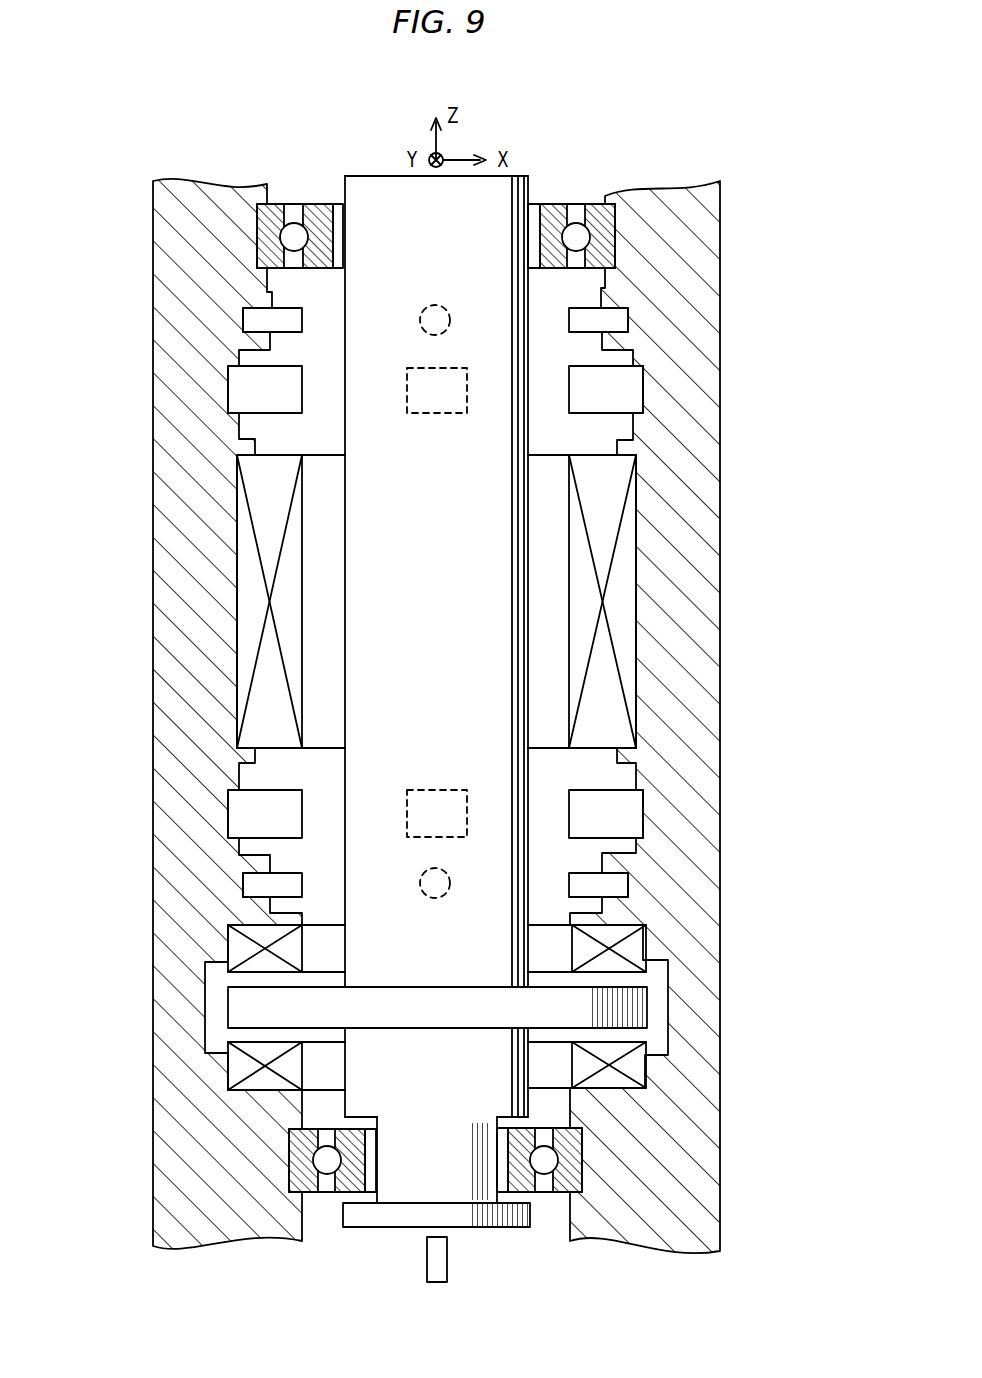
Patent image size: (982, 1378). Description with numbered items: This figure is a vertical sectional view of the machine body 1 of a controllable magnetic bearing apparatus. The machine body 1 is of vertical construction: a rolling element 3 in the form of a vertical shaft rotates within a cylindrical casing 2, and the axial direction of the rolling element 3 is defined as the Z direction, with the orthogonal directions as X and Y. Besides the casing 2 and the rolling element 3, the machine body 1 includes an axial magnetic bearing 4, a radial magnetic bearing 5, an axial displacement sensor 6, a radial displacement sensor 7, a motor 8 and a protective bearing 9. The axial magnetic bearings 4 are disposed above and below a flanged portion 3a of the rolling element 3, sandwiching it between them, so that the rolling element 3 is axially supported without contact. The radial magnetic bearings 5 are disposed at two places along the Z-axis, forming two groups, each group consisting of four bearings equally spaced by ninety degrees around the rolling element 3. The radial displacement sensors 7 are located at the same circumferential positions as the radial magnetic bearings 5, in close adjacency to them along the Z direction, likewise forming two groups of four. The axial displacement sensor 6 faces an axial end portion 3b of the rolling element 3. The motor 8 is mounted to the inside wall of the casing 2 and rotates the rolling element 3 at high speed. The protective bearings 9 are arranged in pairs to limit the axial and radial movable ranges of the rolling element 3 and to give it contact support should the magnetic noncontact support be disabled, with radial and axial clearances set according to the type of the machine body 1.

The machine body 1 is at (559, 173).
The casing 2 is at (676, 196).
The rolling element 3 is at (363, 189).
The flanged portion 3a is at (227, 1004).
The axial end portion 3b is at (352, 1228).
The axial magnetic bearing 4 is at (646, 1077).
The radial magnetic bearing 5 is at (228, 388).
The axial displacement sensor 6 is at (447, 1262).
The radial displacement sensor 7 is at (243, 320).
The motor 8 is at (636, 613).
The protective bearing 9 is at (615, 253).